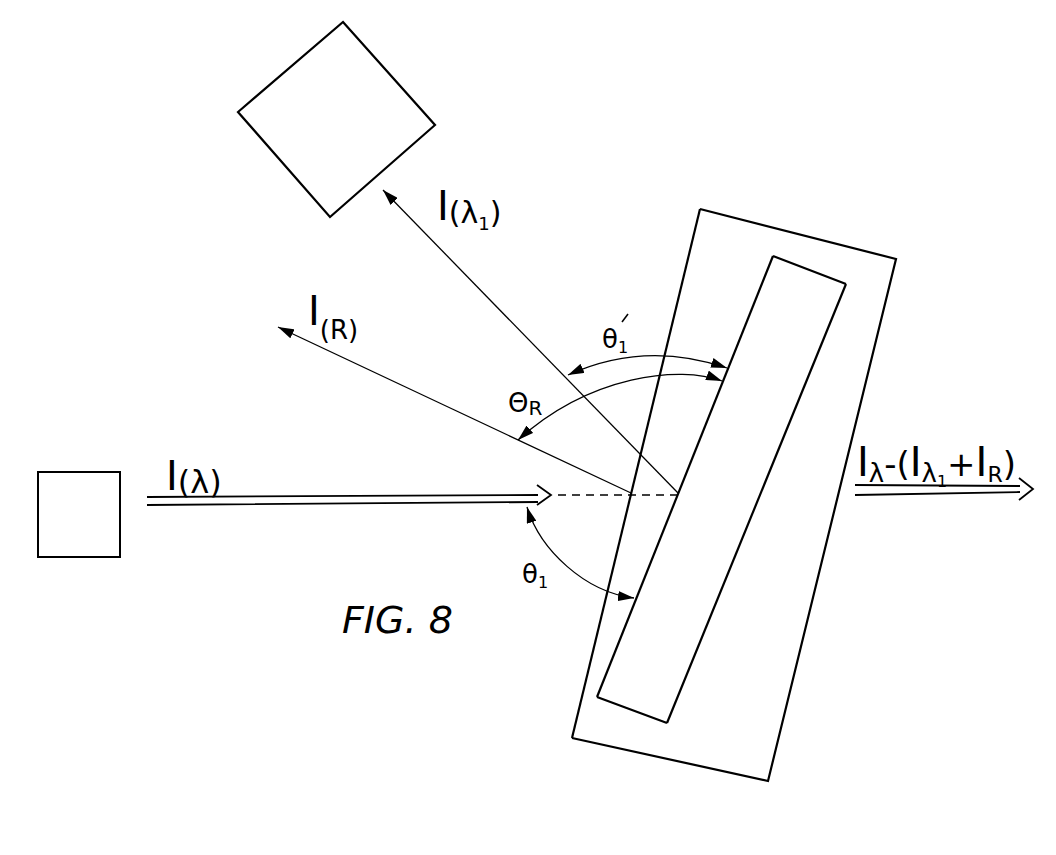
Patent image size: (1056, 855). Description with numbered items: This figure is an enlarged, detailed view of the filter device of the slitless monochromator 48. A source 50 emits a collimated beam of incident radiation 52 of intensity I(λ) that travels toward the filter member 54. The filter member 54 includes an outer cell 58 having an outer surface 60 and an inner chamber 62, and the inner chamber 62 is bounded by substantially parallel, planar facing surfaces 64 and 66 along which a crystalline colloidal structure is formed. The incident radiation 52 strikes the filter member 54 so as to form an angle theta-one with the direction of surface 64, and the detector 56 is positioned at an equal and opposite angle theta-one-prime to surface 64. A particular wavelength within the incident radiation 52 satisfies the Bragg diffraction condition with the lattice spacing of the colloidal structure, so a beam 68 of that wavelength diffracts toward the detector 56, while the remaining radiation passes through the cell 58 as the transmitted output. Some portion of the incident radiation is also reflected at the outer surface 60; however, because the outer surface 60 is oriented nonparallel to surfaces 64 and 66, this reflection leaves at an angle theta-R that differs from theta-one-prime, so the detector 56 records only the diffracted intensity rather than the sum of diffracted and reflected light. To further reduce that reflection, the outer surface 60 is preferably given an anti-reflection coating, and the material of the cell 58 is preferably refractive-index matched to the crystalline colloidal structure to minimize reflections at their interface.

The slitless monochromator 48 is at (794, 147).
The source 50 is at (88, 557).
The collimated beam of incident radiation 52 is at (274, 507).
The filter member 54 is at (942, 176).
The detector 56 is at (337, 134).
The outer cell 58 is at (740, 754).
The outer surface 60 is at (693, 225).
The inner chamber 62 is at (668, 489).
The facing surface 64 is at (603, 684).
The facing surface 66 is at (697, 647).
The diffracted beam 68 is at (497, 303).